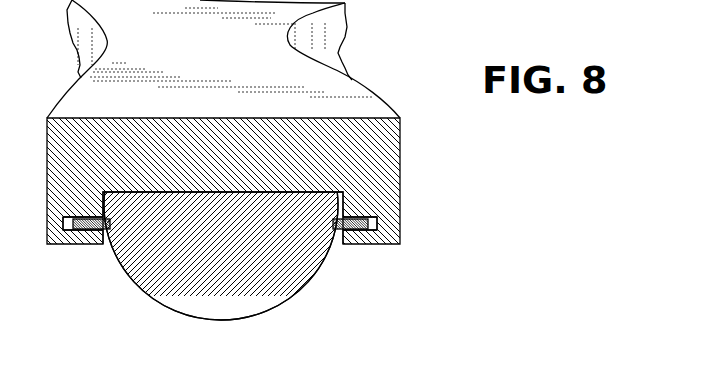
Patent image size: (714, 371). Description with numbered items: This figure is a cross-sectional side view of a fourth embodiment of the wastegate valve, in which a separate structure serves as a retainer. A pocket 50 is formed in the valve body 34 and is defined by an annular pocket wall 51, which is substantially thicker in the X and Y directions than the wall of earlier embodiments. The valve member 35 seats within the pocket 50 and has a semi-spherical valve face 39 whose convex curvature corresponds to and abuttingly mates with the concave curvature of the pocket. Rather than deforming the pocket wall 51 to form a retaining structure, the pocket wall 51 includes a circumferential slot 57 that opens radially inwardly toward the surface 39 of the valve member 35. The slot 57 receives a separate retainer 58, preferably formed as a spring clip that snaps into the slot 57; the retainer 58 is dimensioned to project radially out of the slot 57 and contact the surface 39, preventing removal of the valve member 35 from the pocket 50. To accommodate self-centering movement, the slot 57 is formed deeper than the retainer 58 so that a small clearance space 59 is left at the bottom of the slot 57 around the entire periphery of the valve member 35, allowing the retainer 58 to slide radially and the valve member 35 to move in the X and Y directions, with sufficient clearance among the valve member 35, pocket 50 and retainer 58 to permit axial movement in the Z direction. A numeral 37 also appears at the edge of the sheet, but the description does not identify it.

The valve body 34 is at (322, 98).
The pocket 50 is at (318, 191).
The annular pocket wall 51 is at (366, 244).
The semi-spherical valve face 39 is at (190, 291).
The valve member 35 is at (251, 296).
The circumferential slot 57 is at (93, 244).
The retainer 58 is at (355, 231).
The clearance space 59 is at (65, 222).
The lower element 37 is at (492, 368).